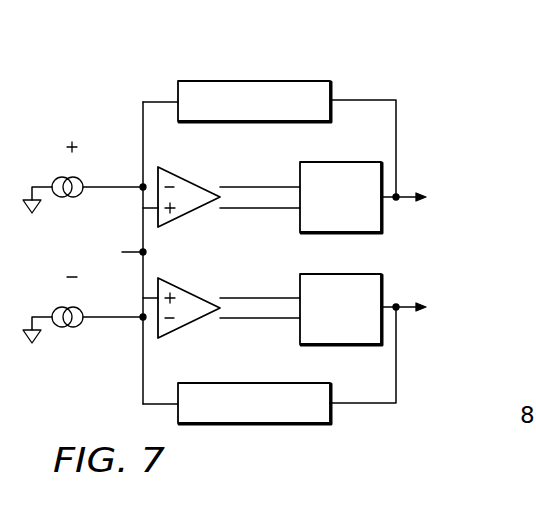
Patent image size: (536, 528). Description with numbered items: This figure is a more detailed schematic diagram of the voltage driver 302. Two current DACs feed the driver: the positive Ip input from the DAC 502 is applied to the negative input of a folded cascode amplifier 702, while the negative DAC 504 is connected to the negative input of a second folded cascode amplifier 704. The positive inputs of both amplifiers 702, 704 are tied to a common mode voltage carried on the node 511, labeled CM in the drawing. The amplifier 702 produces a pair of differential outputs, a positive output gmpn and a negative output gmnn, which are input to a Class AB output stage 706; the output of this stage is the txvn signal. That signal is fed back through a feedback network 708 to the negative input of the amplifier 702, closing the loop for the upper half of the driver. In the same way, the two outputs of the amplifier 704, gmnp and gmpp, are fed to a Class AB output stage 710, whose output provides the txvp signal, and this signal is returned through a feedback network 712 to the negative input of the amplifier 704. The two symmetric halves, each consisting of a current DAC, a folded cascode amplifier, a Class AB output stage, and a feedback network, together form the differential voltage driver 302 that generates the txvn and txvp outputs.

The voltage driver 302 is at (119, 80).
The current DAC 502 is at (72, 197).
The current DAC 504 is at (72, 327).
The node 511 is at (138, 249).
The folded cascode amplifier 702 is at (178, 171).
The folded cascode amplifier 704 is at (178, 334).
The Class AB output stage 706 is at (352, 161).
The feedback network 708 is at (254, 80).
The Class AB output stage 710 is at (352, 345).
The feedback network 712 is at (252, 425).